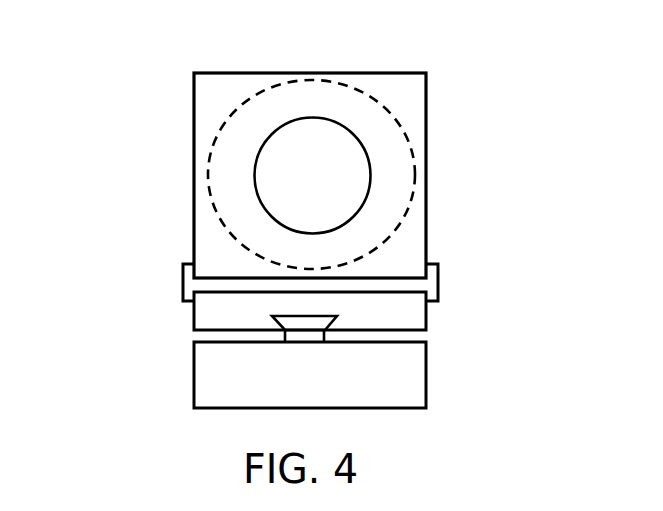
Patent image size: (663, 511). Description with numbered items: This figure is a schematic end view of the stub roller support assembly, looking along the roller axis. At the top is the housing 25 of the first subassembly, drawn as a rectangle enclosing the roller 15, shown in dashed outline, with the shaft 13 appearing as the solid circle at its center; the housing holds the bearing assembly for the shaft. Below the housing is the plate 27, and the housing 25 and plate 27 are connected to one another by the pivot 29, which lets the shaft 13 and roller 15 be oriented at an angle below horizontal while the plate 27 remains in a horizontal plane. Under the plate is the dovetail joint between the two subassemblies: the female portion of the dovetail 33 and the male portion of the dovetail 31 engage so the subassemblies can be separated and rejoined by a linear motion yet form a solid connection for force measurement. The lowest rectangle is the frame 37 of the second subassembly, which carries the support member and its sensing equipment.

The shaft 13 is at (333, 159).
The roller 15 is at (367, 93).
The housing 25 is at (193, 132).
The plate 27 is at (407, 317).
The pivot 29 is at (430, 280).
The male portion of dovetail 31 is at (300, 335).
The female portion of dovetail 33 is at (308, 315).
The frame 37 is at (408, 393).